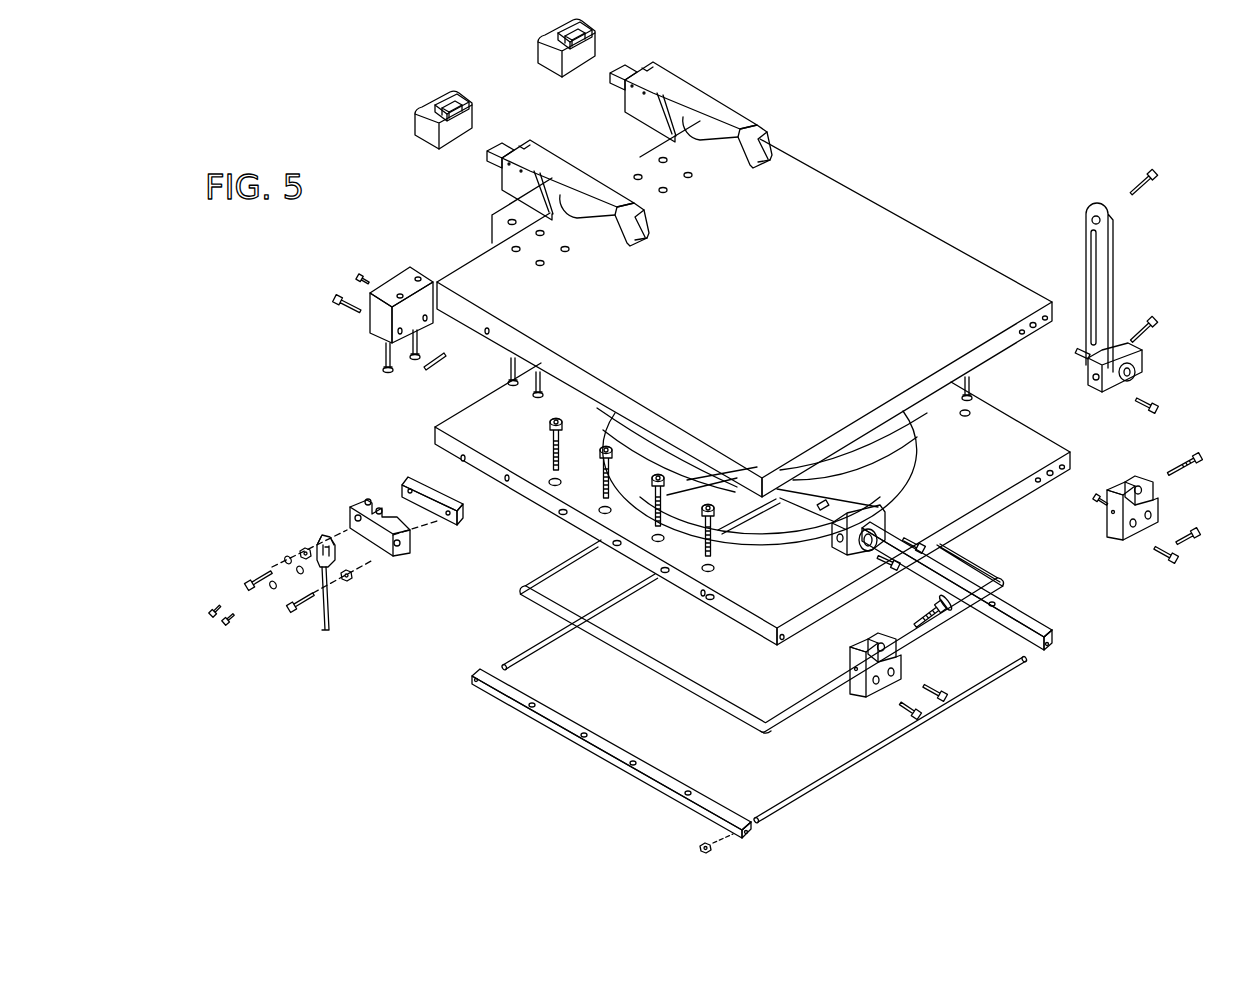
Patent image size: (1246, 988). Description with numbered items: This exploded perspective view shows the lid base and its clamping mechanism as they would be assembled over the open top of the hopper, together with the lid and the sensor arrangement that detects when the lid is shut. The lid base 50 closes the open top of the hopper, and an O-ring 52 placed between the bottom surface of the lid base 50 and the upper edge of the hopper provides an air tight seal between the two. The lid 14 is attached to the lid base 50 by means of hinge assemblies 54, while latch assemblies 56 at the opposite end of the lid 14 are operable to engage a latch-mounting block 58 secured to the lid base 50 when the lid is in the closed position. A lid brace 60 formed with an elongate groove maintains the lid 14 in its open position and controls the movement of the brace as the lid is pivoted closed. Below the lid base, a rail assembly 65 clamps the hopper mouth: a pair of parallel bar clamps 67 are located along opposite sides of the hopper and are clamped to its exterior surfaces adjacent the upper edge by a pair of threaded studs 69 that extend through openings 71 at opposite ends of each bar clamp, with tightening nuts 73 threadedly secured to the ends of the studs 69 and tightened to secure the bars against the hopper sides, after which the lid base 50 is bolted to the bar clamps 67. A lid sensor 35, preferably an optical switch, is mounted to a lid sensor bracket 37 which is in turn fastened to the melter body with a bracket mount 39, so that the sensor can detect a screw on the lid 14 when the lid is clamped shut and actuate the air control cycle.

The lid 14 is at (828, 212).
The lid sensor 35 is at (332, 600).
The lid sensor bracket 37 is at (385, 540).
The bracket mount 39 is at (440, 518).
The lid base 50 is at (758, 598).
The O-ring 52 is at (670, 678).
The hinge assemblies 54 is at (1107, 523).
The latch assemblies 56 is at (520, 138).
The latch-mounting block 58 is at (460, 98).
The lid brace 60 is at (1134, 271).
The rail assembly 65 is at (862, 790).
The bar clamps 67 is at (647, 773).
The threaded studs 69 is at (905, 735).
The openings 71 is at (742, 835).
The tightening nuts 73 is at (600, 466).